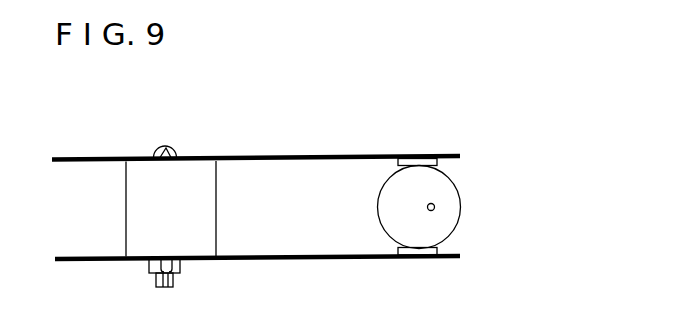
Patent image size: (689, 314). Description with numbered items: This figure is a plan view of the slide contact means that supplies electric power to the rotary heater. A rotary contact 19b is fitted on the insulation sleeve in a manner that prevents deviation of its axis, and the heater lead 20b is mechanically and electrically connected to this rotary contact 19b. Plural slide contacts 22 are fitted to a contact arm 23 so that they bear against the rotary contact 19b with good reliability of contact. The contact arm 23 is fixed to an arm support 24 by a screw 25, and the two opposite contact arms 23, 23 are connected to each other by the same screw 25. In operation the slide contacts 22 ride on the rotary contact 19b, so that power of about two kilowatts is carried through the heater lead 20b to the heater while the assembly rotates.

The rotary contact 19b is at (453, 213).
The heater lead 20b is at (435, 205).
The slide contacts 22 is at (437, 162).
The contact arm 23 is at (446, 155).
The arm support 24 is at (202, 169).
The screw 25 is at (173, 145).